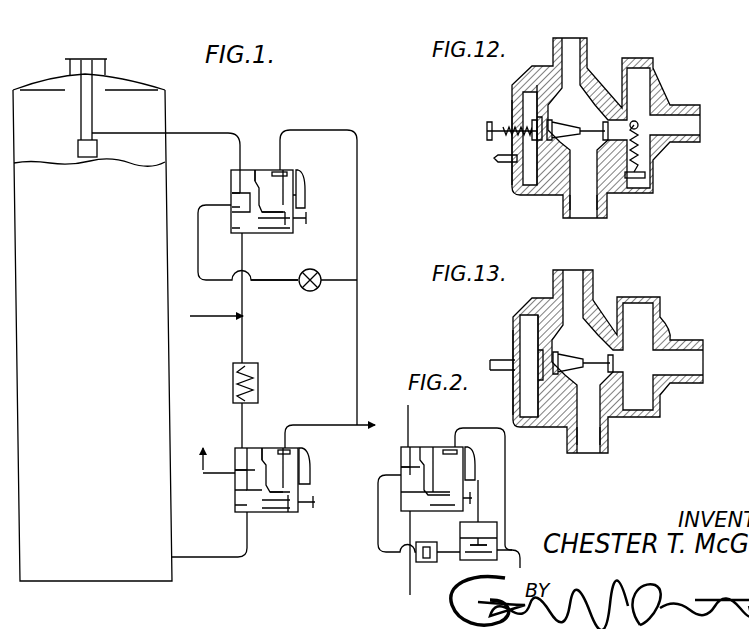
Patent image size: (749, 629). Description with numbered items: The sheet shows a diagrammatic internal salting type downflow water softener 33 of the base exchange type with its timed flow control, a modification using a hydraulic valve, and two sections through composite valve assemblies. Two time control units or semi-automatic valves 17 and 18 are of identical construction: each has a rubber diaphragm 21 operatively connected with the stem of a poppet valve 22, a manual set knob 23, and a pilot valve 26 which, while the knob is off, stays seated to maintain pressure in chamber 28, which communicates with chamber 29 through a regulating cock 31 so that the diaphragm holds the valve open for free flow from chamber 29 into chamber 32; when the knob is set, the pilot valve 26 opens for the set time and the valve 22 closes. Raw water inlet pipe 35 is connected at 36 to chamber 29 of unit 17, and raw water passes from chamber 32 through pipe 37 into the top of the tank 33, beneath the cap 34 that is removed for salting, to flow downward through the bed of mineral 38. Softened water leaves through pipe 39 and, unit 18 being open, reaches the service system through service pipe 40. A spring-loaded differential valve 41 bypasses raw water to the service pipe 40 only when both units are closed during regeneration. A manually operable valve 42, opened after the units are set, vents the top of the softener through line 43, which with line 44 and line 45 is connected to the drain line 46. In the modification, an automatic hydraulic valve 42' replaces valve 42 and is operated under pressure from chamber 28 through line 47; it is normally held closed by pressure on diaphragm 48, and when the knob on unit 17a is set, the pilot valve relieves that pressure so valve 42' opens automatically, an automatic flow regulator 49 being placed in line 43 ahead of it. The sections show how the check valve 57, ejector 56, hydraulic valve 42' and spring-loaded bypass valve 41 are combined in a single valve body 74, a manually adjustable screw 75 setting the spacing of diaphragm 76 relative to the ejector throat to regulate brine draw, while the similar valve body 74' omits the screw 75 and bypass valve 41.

In FIG. 1, the time control unit 17 is at (253, 236).
In FIG. 2, the time control unit 17a is at (421, 446).
In FIG. 1, the time control unit 18 is at (256, 514).
In FIG. 1, the rubber diaphragm 21 is at (262, 171).
In FIG. 1, the poppet valve 22 is at (232, 190).
In FIG. 2, the poppet valve 22 is at (411, 480).
In FIG. 1, the manual set knob 23 is at (306, 196).
In FIG. 2, the manual set knob 23 is at (470, 459).
In FIG. 1, the pilot valve 26 is at (283, 172).
In FIG. 2, the pilot valve 26 is at (453, 463).
In FIG. 1, the chamber 28 is at (324, 492).
In FIG. 1, the chamber 29 is at (235, 230).
In FIG. 1, the regulating cock 31 is at (308, 220).
In FIG. 1, the chamber 32 is at (232, 207).
In FIG. 1, the water softener 33 is at (165, 115).
In FIG. 1, the cap 34 is at (93, 60).
In FIG. 1, the raw water inlet pipe 35 is at (204, 318).
In FIG. 1, the connection 36 is at (243, 261).
In FIG. 2, the connection 36 is at (411, 578).
In FIG. 1, the pipe 37 is at (217, 133).
In FIG. 2, the pipe 37 is at (408, 430).
In FIG. 1, the bed of mineral 38 is at (42, 162).
In FIG. 1, the pipe 39 is at (204, 558).
In FIG. 1, the service pipe 40 is at (203, 473).
In FIG. 1, the spring-loaded differential valve 41 is at (259, 380).
In FIG. 12, the spring-loaded differential valve 41 is at (646, 171).
In FIG. 1, the manually operable valve 42 is at (311, 294).
In FIG. 2, the automatic hydraulic valve 42' is at (509, 531).
In FIG. 12, the automatic hydraulic valve 42' is at (511, 132).
In FIG. 13, the automatic hydraulic valve 42' is at (559, 363).
In FIG. 1, the line 43 is at (258, 282).
In FIG. 2, the line 43 is at (378, 540).
In FIG. 1, the line 44 is at (358, 173).
In FIG. 2, the line 44 is at (506, 472).
In FIG. 1, the line 45 is at (316, 425).
In FIG. 2, the drain line 46 is at (387, 437).
In FIG. 2, the line 47 is at (478, 497).
In FIG. 12, the line 47 is at (496, 158).
In FIG. 13, the line 47 is at (501, 360).
In FIG. 2, the diaphragm 48 is at (481, 537).
In FIG. 2, the automatic flow regulator 49 is at (427, 542).
In FIG. 12, the ejector 56 is at (566, 118).
In FIG. 13, the ejector 56 is at (563, 378).
In FIG. 12, the check valve 57 is at (572, 202).
In FIG. 13, the check valve 57 is at (582, 438).
In FIG. 12, the valve body 74 is at (606, 113).
In FIG. 13, the valve body 74' is at (608, 351).
In FIG. 12, the screw 75 is at (487, 131).
In FIG. 12, the diaphragm 76 is at (523, 168).
In FIG. 13, the diaphragm 76 is at (525, 386).